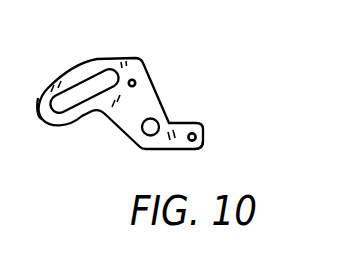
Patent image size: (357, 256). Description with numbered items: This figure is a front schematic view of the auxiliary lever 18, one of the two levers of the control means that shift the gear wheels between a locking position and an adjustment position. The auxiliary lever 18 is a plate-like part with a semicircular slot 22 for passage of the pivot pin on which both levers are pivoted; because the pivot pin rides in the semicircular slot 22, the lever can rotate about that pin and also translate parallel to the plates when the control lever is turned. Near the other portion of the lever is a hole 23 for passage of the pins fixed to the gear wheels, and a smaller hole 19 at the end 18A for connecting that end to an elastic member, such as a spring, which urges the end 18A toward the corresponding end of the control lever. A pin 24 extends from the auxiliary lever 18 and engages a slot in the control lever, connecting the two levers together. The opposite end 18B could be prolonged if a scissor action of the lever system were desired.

The auxiliary lever 18 is at (137, 58).
The end of the auxiliary lever 18A is at (198, 147).
The end of the auxiliary lever 18B is at (43, 115).
The hole 19 is at (197, 133).
The semicircular slot 22 is at (83, 105).
The hole 23 is at (158, 120).
The pin 24 is at (136, 80).